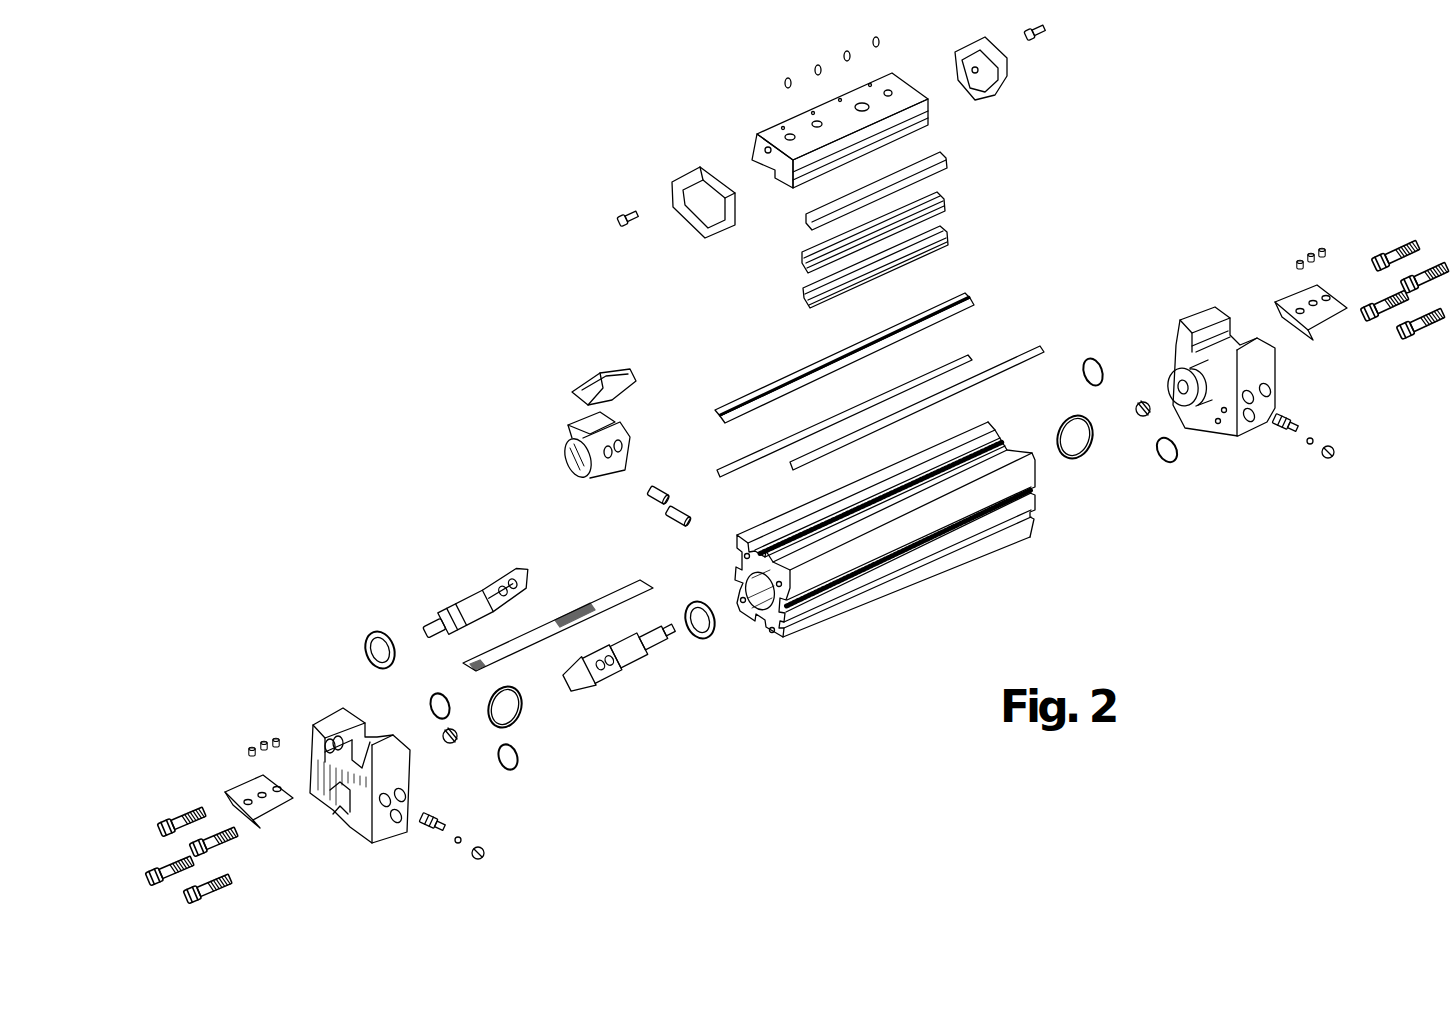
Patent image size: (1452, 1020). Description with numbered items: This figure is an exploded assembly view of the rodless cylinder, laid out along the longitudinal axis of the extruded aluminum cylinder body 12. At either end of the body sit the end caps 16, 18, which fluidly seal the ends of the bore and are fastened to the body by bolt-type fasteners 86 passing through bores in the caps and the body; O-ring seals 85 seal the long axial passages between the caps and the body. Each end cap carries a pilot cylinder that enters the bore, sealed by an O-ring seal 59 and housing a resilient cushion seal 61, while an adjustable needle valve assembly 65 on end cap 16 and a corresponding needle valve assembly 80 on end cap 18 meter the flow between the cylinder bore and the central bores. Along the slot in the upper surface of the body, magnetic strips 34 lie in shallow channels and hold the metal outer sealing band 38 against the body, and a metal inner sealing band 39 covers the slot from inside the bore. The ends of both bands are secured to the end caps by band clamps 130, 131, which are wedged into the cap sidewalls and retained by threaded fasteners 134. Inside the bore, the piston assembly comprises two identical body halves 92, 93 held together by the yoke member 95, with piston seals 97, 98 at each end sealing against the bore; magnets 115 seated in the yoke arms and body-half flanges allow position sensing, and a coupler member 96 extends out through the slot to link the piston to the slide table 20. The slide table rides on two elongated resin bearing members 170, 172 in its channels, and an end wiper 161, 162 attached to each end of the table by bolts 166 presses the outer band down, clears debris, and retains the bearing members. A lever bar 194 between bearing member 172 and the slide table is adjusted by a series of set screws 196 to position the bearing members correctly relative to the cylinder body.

The cylinder body 12 is at (877, 588).
The end cap 16 is at (1207, 318).
The end cap 18 is at (342, 814).
The slide table 20 is at (765, 135).
The magnetic strip 34 is at (966, 355).
The outer sealing band 38 is at (552, 617).
The inner sealing band 39 is at (785, 375).
The O-ring seal 59 is at (1077, 460).
The cushion seal 61 is at (1143, 418).
The needle valve assembly 65 is at (1313, 485).
The needle valve assembly 80 is at (505, 866).
The O-ring seal 85 is at (1097, 360).
The bolt-type fasteners 86 is at (1405, 235).
The piston body half 92 is at (627, 677).
The piston body half 93 is at (458, 593).
The yoke member 95 is at (568, 447).
The coupler member 96 is at (582, 385).
The piston seal 97 is at (708, 638).
The piston seal 98 is at (370, 635).
The magnets 115 is at (670, 520).
The band clamp 130 is at (1335, 318).
The band clamp 131 is at (242, 790).
The threaded fasteners 134 is at (1296, 240).
The end wiper 161 is at (968, 95).
The end wiper 162 is at (682, 185).
The bolts 166 is at (626, 212).
The bearing member 170 is at (940, 195).
The bearing member 172 is at (944, 230).
The lever bar 194 is at (806, 218).
The set screws 196 is at (882, 32).